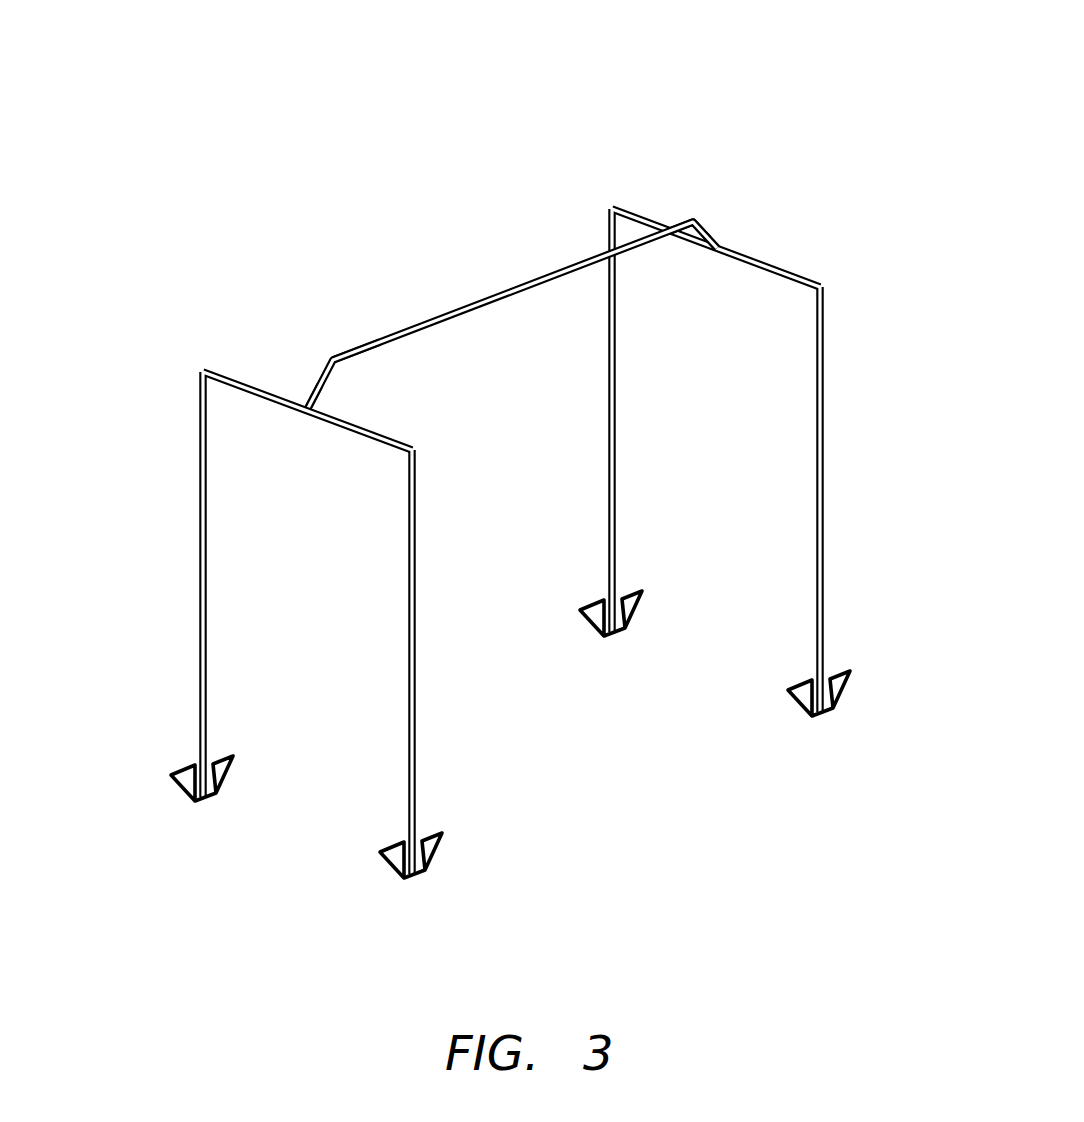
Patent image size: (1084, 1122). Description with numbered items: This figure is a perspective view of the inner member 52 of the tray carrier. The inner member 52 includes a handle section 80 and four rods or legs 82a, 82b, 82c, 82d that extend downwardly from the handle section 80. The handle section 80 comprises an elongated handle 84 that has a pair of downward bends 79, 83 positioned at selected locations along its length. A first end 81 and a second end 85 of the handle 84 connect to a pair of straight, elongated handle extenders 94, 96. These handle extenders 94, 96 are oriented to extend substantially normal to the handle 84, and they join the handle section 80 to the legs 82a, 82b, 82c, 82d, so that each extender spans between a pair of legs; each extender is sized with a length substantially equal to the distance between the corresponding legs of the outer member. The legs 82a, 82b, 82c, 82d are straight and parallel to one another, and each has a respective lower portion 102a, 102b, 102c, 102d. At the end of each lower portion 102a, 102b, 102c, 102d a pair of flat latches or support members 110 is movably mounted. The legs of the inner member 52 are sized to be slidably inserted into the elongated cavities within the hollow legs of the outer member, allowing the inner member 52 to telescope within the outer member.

The inner member 52 is at (722, 60).
The handle section 80 is at (425, 226).
The downward bend 79 is at (337, 362).
The first end 81 is at (305, 402).
The downward bend 83 is at (697, 220).
The elongated handle 84 is at (573, 260).
The second end 85 is at (720, 245).
The handle extender 94 is at (350, 433).
The handle extender 96 is at (765, 268).
The leg 82a is at (200, 470).
The leg 82b is at (408, 605).
The leg 82c is at (613, 415).
The leg 82d is at (822, 380).
The lower portion 102a is at (200, 740).
The lower portion 102b is at (408, 795).
The lower portion 102c is at (613, 558).
The lower portion 102d is at (822, 635).
The flat latch 110 is at (180, 770).